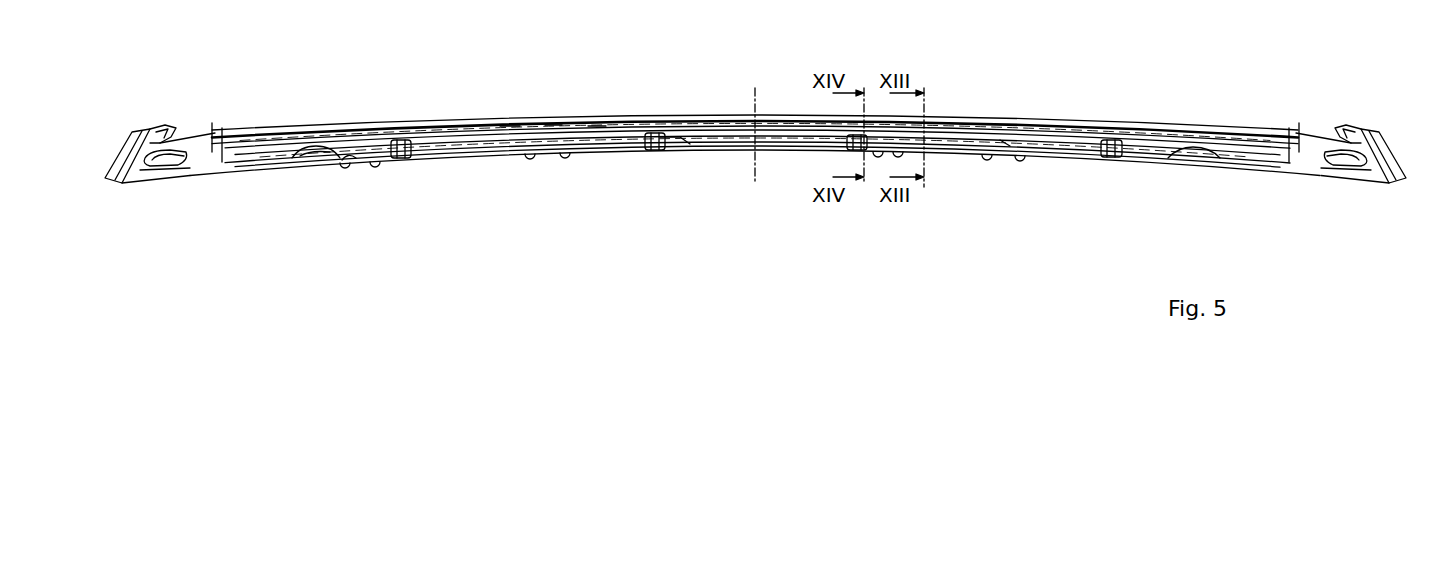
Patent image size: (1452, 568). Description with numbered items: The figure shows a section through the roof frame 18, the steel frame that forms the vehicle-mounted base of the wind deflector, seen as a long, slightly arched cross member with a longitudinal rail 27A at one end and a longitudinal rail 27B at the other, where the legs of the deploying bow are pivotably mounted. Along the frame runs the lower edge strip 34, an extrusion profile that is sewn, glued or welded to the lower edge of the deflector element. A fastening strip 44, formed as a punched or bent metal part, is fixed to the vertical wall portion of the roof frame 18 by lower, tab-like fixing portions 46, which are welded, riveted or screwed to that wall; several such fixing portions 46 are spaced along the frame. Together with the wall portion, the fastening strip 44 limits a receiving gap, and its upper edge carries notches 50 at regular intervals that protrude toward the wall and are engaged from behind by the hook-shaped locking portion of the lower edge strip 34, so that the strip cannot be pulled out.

The roof frame 18 is at (1378, 131).
The longitudinal rail 27A is at (121, 170).
The longitudinal rail 27B is at (1392, 170).
The lower edge strip 34 is at (580, 120).
The fastening strip 44 is at (286, 153).
The fixing portions 46 is at (397, 158).
The notches 50 is at (598, 130).